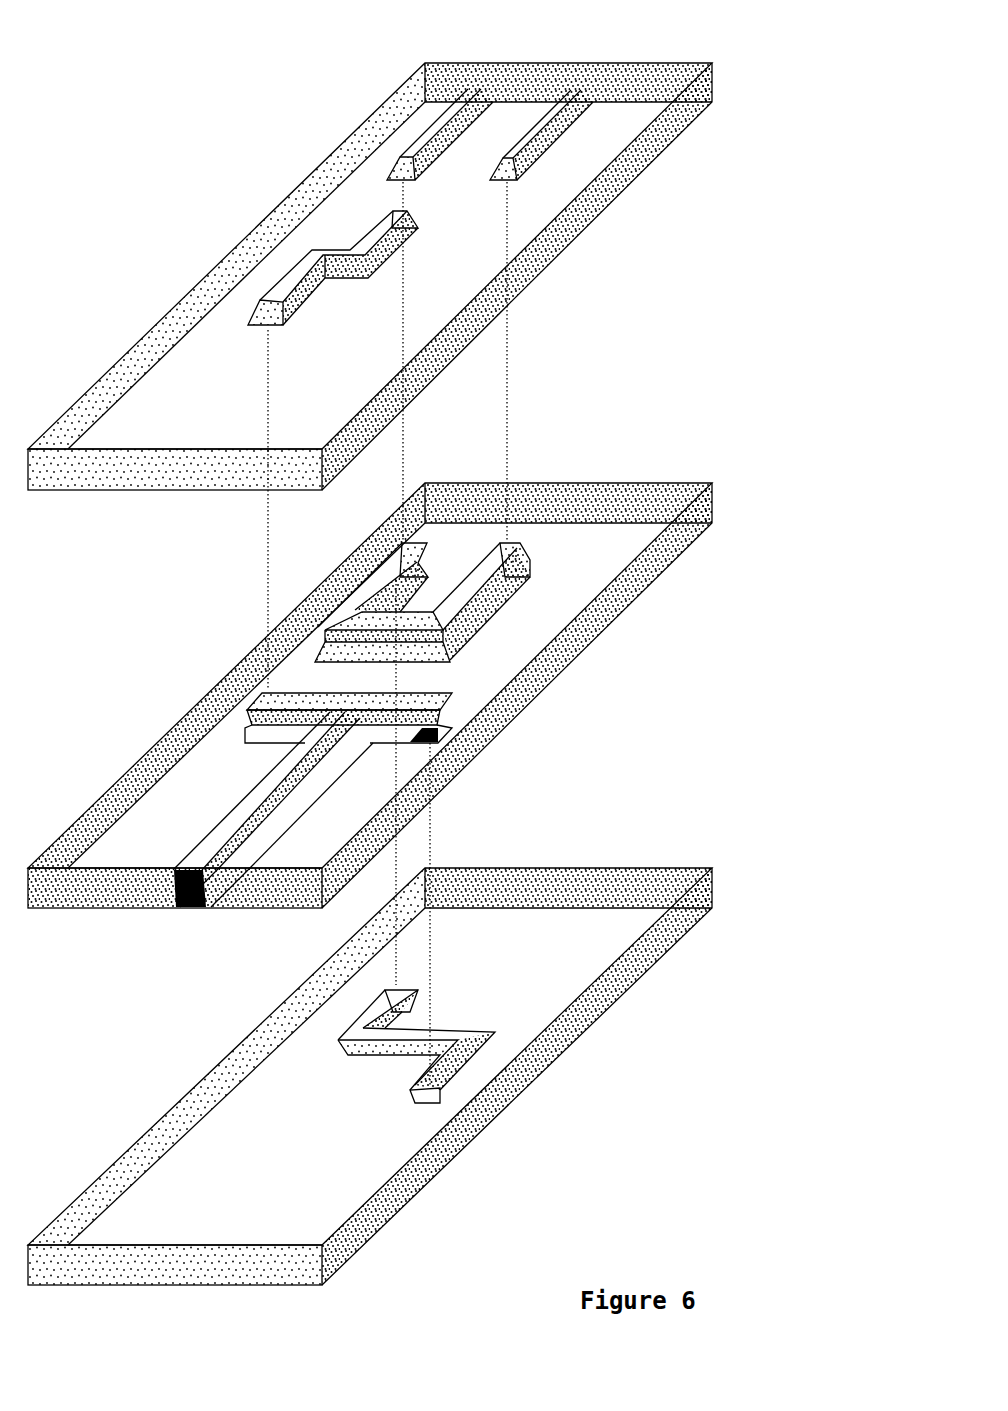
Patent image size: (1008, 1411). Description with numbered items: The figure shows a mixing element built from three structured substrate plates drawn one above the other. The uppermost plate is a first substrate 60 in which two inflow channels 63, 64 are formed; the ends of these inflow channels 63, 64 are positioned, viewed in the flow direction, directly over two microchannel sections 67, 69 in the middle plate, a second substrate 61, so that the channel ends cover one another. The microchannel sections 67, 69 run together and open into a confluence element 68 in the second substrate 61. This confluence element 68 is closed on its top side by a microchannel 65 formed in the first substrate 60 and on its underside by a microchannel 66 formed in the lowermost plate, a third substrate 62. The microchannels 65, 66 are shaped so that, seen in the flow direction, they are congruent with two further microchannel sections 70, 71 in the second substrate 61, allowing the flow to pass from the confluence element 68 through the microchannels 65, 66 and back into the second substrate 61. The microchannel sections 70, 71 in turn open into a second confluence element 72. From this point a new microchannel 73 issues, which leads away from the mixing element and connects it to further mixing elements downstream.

The first substrate 60 is at (545, 243).
The second substrate 61 is at (717, 527).
The third substrate 62 is at (512, 1092).
The inflow channel 63 is at (478, 92).
The inflow channel 64 is at (578, 95).
The microchannel 65 is at (387, 227).
The microchannel 66 is at (472, 1037).
The microchannel section 67 is at (482, 580).
The confluence element 68 is at (400, 625).
The microchannel section 69 is at (355, 593).
The microchannel section 70 is at (440, 742).
The microchannel section 71 is at (328, 711).
The confluence element 72 is at (345, 700).
The microchannel 73 is at (232, 822).